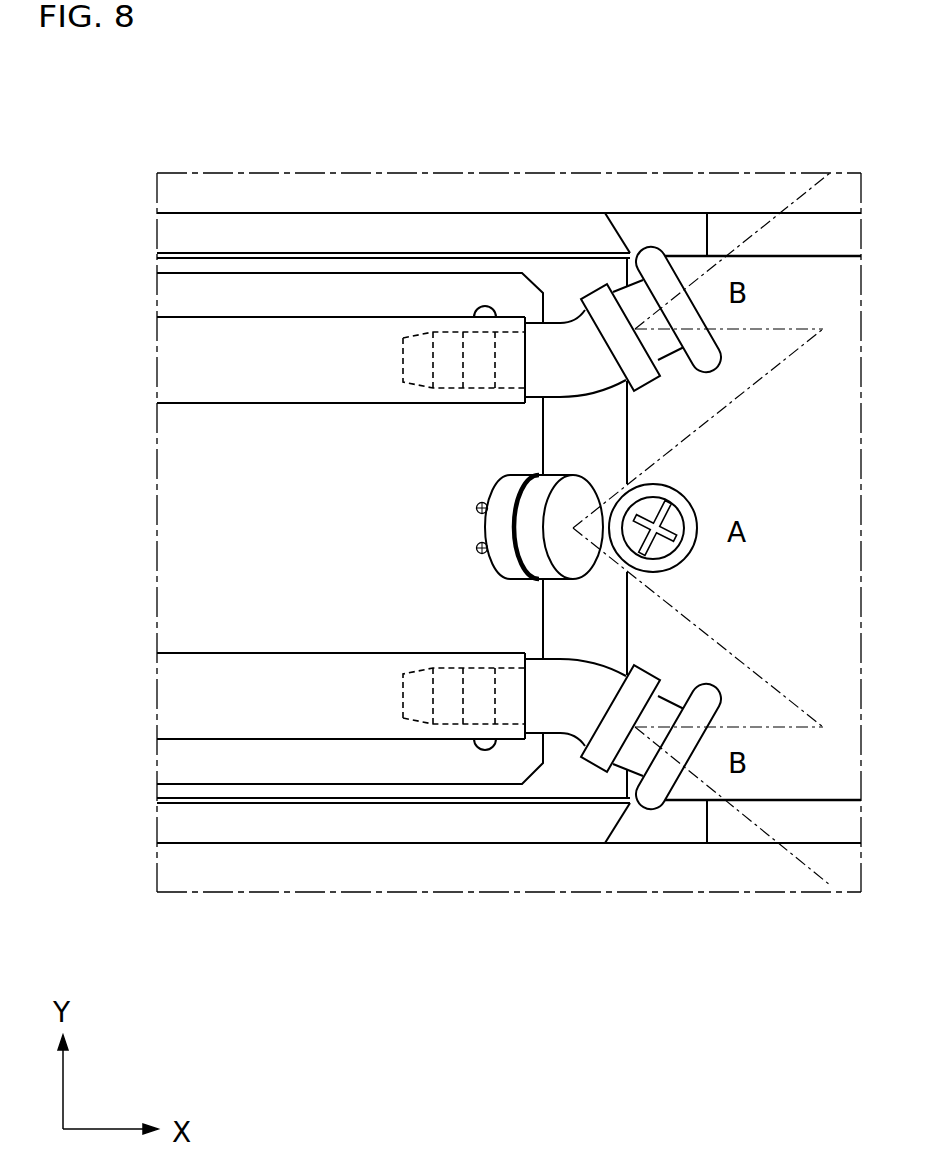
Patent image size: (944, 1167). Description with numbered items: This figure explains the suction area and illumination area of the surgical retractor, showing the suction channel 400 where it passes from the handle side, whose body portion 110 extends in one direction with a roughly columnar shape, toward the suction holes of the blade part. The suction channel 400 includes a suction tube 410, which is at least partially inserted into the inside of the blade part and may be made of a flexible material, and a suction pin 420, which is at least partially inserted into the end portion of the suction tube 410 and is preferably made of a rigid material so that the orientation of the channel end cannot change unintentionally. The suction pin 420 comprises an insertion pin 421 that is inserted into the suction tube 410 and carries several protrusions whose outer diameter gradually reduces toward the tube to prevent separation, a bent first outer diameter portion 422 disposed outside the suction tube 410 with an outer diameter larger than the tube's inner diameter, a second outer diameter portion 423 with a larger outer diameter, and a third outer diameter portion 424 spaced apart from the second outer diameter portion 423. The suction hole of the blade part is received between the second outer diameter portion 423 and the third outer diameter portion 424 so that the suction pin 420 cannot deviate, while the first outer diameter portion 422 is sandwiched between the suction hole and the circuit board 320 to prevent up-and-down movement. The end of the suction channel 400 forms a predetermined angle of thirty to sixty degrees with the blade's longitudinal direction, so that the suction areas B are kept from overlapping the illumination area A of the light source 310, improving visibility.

The body portion 110 is at (565, 273).
The light source 310 is at (500, 523).
The circuit board 320 is at (220, 462).
The suction channel 400 is at (172, 355).
The suction tube 410 is at (252, 705).
The suction pin 420 is at (705, 990).
The insertion pin 421 is at (445, 712).
The first outer diameter portion 422 is at (560, 705).
The second outer diameter portion 423 is at (598, 750).
The third outer diameter portion 424 is at (660, 782).